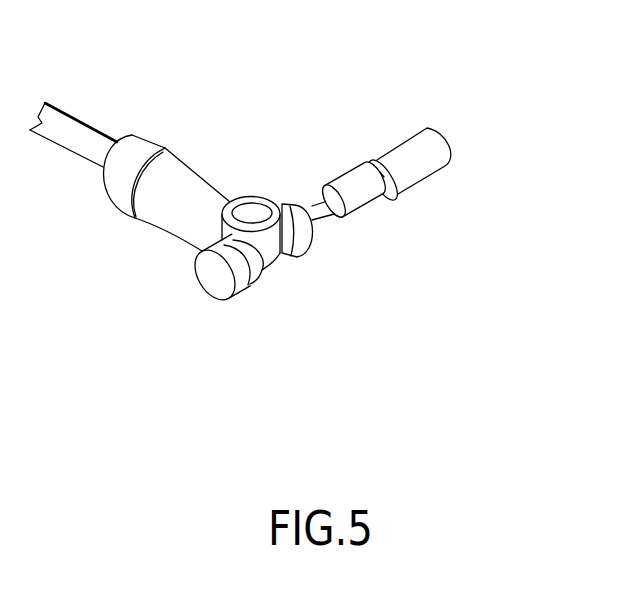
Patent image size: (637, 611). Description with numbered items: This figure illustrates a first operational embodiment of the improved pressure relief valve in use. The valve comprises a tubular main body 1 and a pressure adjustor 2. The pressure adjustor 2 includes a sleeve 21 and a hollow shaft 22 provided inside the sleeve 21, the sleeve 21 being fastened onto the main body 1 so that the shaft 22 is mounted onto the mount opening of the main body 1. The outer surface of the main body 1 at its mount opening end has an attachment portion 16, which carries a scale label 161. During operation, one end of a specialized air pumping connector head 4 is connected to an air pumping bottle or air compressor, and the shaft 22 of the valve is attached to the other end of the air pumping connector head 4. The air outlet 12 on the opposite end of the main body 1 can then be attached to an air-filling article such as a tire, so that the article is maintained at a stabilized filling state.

The tubular main body 1 is at (439, 159).
The air outlet 12 is at (446, 140).
The attachment portion 16 is at (391, 188).
The scale label 161 is at (371, 199).
The pressure adjustor 2 is at (338, 198).
The sleeve 21 is at (355, 214).
The hollow shaft 22 is at (326, 221).
The air pumping connector head 4 is at (165, 157).